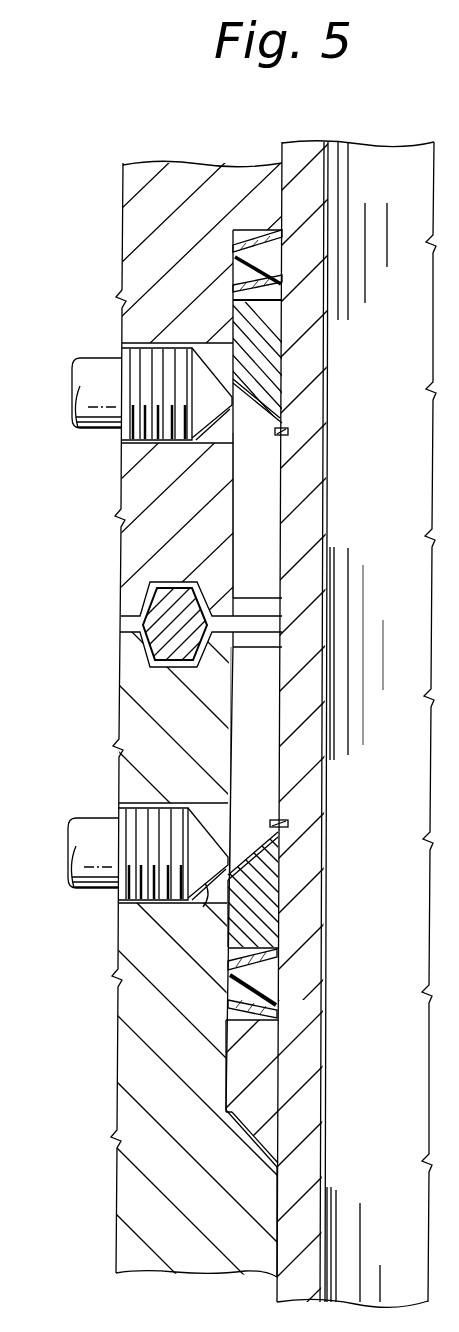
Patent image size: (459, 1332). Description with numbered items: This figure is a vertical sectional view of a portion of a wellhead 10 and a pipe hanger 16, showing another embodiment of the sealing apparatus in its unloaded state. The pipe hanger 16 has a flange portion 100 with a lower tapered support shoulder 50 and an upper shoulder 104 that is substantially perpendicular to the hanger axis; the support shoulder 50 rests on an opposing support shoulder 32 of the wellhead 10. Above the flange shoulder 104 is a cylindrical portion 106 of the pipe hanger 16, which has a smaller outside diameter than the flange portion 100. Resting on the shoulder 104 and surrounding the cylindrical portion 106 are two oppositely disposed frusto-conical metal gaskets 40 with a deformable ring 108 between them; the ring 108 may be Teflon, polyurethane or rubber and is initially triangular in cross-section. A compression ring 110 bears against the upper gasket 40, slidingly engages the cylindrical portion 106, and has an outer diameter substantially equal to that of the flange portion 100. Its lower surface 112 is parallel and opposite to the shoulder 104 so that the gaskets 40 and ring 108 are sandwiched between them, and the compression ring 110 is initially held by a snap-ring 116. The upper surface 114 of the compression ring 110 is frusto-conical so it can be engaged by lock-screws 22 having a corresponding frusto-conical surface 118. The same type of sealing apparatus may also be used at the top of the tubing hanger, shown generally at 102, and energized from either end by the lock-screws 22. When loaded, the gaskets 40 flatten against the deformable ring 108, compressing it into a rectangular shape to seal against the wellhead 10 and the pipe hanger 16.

The wellhead 10 is at (140, 1192).
The pipe hanger 16 is at (338, 469).
The lock-screws 22 is at (100, 370).
The support shoulder 32 is at (247, 1155).
The frusto-conical metal gaskets 40 is at (227, 957).
The lower tapered support shoulder 50 is at (250, 1132).
The flange portion 100 is at (252, 1063).
The sealing apparatus at top of tubing hanger 102 is at (310, 348).
The upper shoulder 104 is at (226, 1037).
The cylindrical portion 106 is at (278, 525).
The deformable ring 108 is at (280, 977).
The compression ring 110 is at (270, 870).
The lower surface 112 is at (258, 937).
The upper surface 114 is at (247, 840).
The snap-ring 116 is at (293, 431).
The frusto-conical surface 118 is at (205, 902).